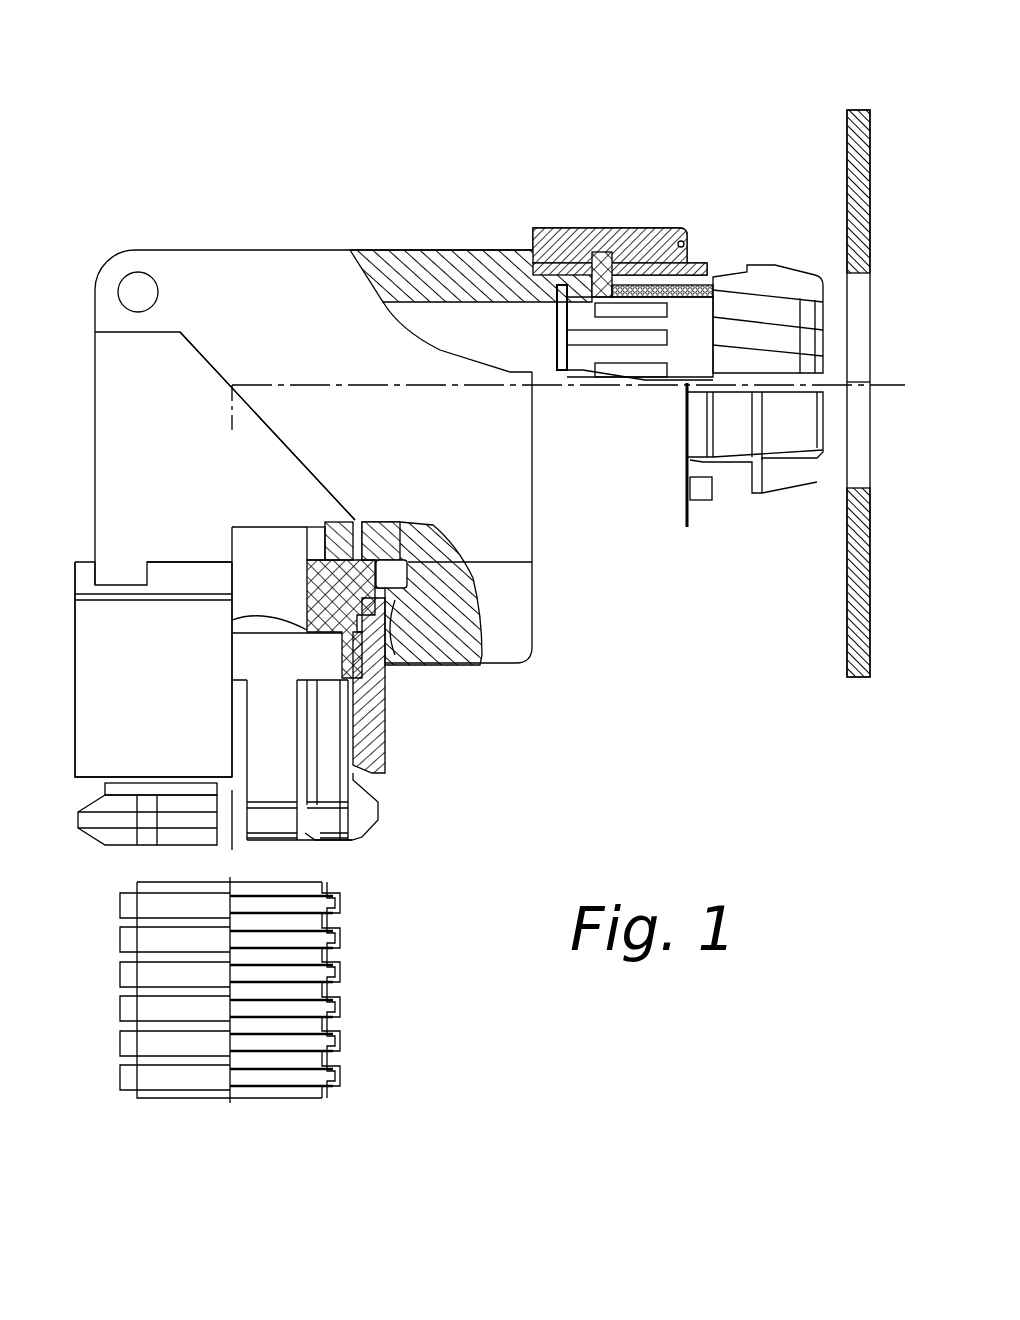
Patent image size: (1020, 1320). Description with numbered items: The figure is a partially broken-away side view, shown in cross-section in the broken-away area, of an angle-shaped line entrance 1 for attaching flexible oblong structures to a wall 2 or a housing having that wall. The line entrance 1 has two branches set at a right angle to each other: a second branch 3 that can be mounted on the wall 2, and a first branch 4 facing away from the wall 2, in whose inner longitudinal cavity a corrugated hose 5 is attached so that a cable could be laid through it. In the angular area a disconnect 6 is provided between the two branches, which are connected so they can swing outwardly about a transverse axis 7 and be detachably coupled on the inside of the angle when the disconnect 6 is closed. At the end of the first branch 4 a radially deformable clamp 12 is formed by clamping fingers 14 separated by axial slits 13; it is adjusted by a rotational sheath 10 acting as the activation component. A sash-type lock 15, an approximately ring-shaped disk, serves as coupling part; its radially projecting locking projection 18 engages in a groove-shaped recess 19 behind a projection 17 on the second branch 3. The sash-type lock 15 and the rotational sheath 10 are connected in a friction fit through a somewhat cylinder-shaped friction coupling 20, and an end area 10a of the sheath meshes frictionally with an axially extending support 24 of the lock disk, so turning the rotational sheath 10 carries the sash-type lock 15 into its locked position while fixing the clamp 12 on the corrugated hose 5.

The line entrance 1 is at (305, 165).
The wall 2 is at (846, 638).
The second branch 3 is at (412, 262).
The first branch 4 is at (100, 438).
The corrugated hose 5 is at (340, 1072).
The disconnect 6 is at (268, 445).
The transverse axis 7 is at (140, 288).
The rotational sheath 10 is at (380, 742).
The end area of the rotating sheath 10a is at (372, 560).
The clamp 12 is at (372, 790).
The axial slits 13 is at (237, 828).
The clamping fingers 14 is at (273, 745).
The sash-type lock 15 is at (176, 580).
The projection 17 is at (405, 662).
The locking projection 18 is at (392, 560).
The groove-shaped recess 19 is at (410, 577).
The friction coupling 20 is at (360, 612).
The support 24 is at (232, 622).